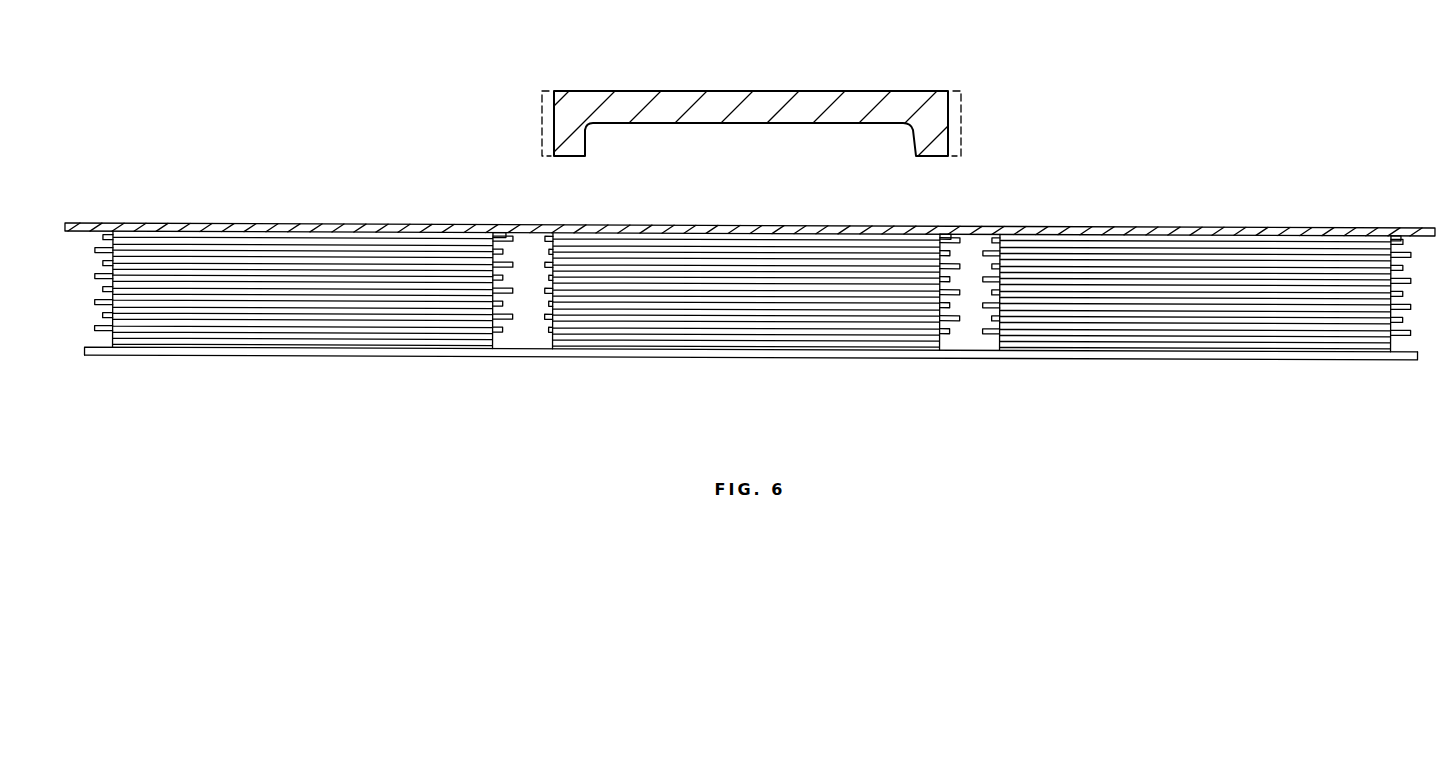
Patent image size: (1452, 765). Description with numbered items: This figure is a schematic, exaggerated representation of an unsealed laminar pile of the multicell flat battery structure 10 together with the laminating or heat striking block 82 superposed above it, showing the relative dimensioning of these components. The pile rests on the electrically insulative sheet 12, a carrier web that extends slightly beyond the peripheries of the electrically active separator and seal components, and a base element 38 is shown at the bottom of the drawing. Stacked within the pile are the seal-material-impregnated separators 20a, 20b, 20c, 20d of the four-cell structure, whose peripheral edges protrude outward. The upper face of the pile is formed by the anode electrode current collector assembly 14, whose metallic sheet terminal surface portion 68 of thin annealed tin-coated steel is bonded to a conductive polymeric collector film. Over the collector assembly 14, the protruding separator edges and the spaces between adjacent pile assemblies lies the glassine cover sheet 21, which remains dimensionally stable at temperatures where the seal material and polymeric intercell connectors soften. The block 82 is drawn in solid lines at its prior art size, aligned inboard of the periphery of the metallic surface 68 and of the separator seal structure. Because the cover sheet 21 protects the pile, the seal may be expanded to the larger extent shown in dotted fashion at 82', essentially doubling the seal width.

The multicell flat battery structure 10 is at (1105, 207).
The electrically insulative sheet 12 is at (1266, 351).
The anode electrode current collector assembly 14 is at (509, 233).
The separator 20a is at (87, 320).
The separator 20b is at (88, 294).
The separator 20c is at (88, 267).
The separator 20d is at (90, 241).
The cover sheet 21 is at (1203, 222).
The base plate 38 is at (97, 338).
The metallic sheet terminal surface portion 68 is at (494, 223).
The laminating or heat striking block 82 is at (743, 101).
The expanded laminating block extent 82' is at (752, 123).